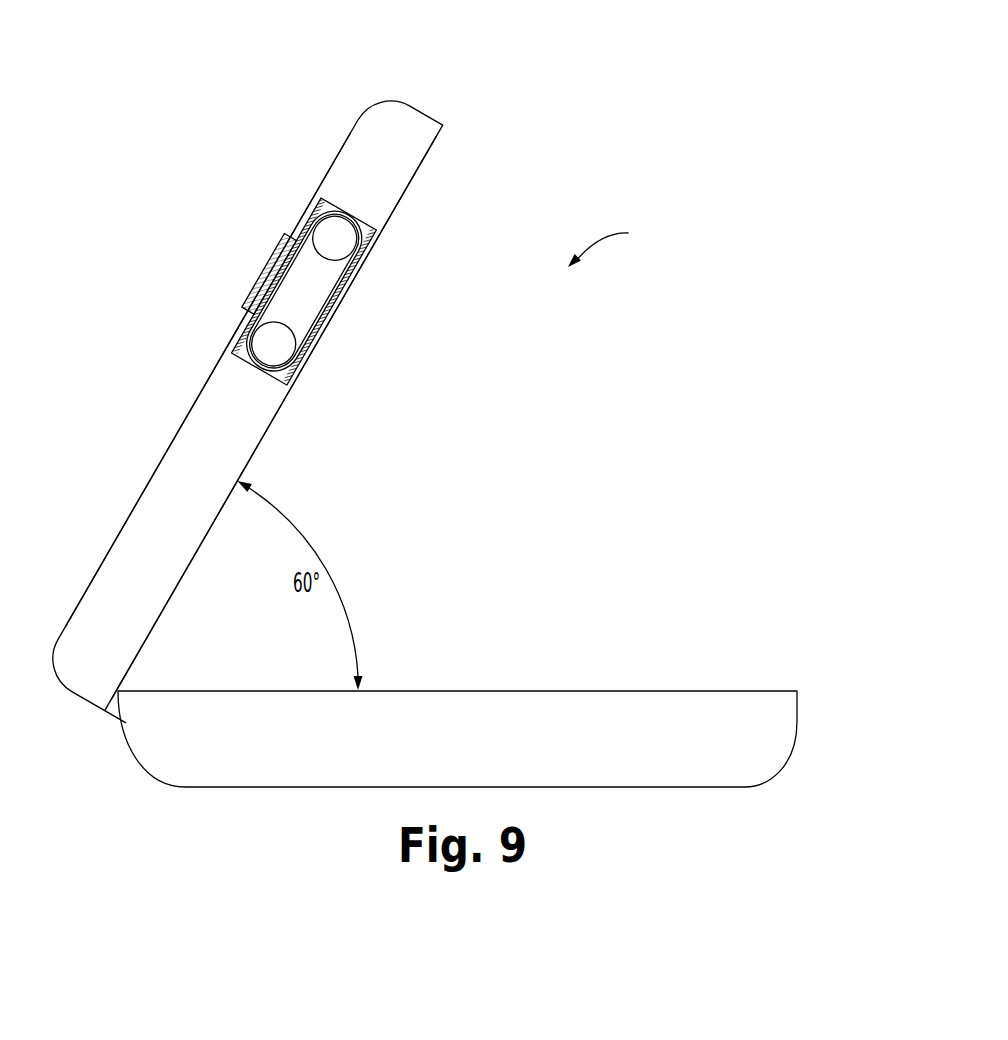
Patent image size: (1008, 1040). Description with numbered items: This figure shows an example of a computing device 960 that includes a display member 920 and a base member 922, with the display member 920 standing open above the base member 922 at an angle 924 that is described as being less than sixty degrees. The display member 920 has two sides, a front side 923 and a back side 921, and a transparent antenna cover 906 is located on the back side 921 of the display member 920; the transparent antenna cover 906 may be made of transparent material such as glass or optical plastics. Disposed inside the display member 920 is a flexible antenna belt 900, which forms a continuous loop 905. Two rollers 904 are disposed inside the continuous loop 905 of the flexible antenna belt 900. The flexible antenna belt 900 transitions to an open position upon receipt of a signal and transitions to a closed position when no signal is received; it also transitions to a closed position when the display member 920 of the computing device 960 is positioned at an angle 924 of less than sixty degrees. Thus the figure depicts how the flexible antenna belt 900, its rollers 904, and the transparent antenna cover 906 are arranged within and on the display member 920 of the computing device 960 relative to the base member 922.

The flexible antenna belt 900 is at (255, 380).
The rollers 904 is at (348, 250).
The continuous loop 905 is at (323, 307).
The transparent antenna cover 906 is at (250, 262).
The display member 920 is at (403, 122).
The back side 921 is at (212, 372).
The base member 922 is at (780, 734).
The front side 923 is at (428, 153).
The angle less than 60 degrees 924 is at (323, 557).
The computing device 960 is at (616, 242).